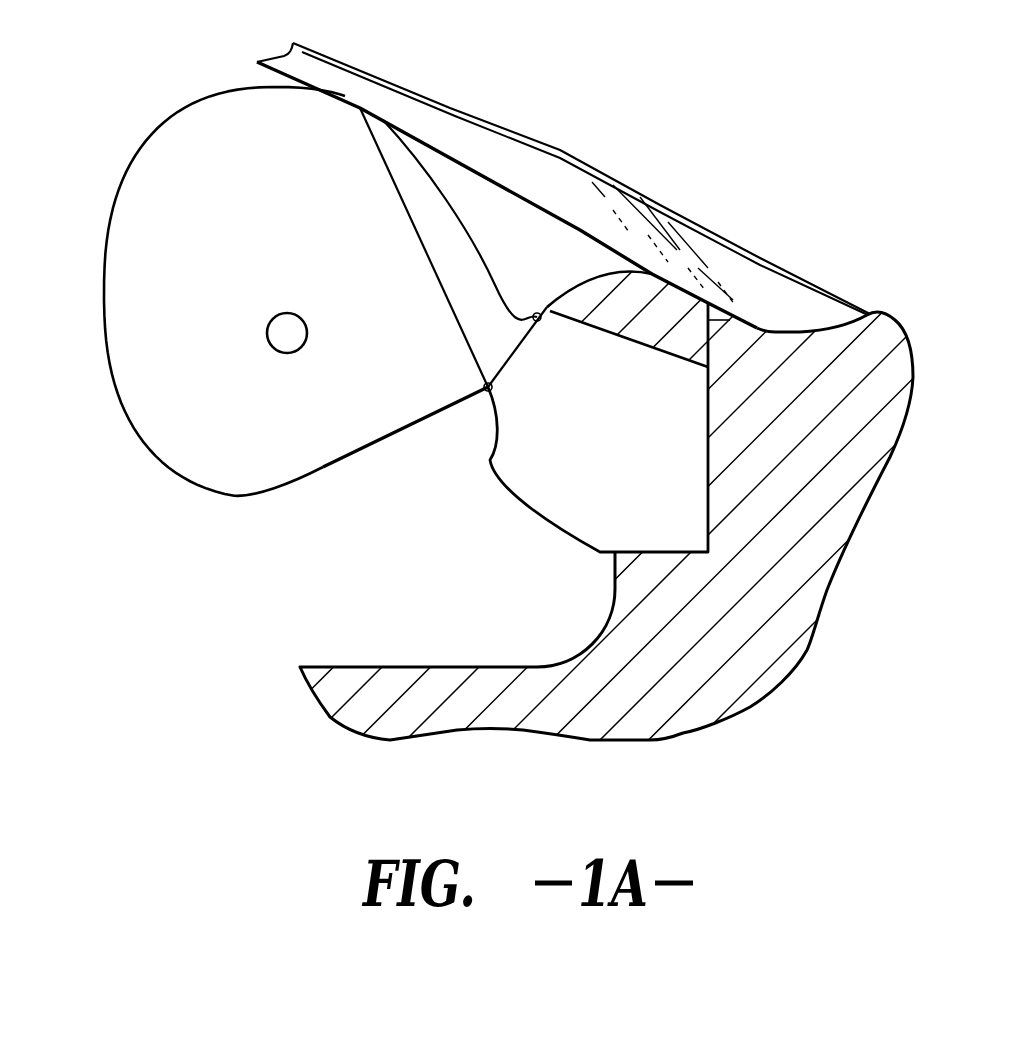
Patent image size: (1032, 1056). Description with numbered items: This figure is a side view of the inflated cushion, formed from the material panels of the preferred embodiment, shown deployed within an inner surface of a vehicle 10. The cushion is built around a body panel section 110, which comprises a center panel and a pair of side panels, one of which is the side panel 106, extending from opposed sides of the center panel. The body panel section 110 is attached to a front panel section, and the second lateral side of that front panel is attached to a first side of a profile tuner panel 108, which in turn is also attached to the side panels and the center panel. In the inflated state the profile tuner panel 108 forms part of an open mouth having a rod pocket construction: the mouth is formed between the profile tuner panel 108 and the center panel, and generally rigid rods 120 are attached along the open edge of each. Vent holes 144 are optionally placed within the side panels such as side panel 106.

The vehicle 10 is at (300, 612).
The side panel 106 is at (283, 453).
The profile tuner panel 108 is at (417, 183).
The body panel section 110 is at (228, 497).
The rigid rods 120 is at (552, 309).
The vent holes 144 is at (265, 333).